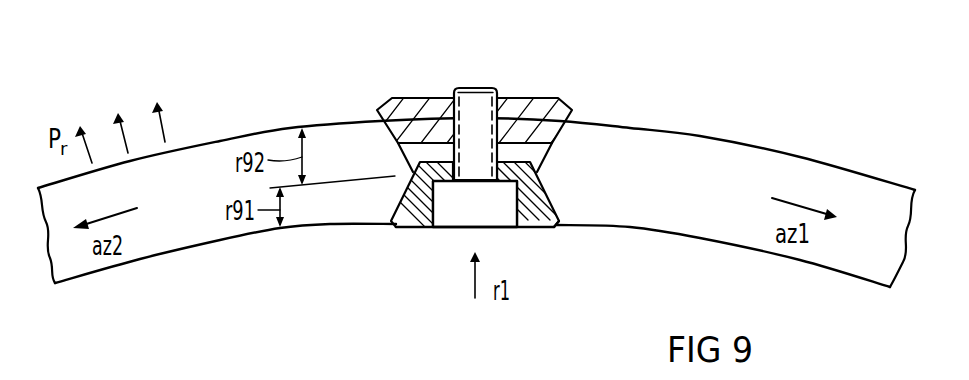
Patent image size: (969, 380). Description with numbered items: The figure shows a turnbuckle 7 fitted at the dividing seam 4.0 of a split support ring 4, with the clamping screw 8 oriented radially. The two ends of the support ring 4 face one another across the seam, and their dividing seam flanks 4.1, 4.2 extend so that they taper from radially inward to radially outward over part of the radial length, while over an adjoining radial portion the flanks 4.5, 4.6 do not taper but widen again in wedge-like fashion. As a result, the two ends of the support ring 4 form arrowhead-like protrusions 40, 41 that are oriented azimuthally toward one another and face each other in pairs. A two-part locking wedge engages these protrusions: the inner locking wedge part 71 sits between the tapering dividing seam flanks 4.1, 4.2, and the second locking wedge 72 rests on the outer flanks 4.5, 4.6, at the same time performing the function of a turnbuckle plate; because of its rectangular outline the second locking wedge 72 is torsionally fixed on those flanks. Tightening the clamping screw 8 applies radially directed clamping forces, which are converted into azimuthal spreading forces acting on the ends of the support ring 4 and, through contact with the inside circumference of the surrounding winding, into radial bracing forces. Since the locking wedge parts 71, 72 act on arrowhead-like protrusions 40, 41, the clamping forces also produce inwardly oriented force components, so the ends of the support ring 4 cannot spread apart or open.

The turnbuckle 7 is at (319, 76).
The support ring 4 is at (708, 206).
The second locking wedge 72 is at (533, 118).
The flank 4.5 is at (392, 140).
The flank 4.6 is at (559, 137).
The arrowhead-like protrusion 40 is at (390, 184).
The dividing seam flank 4.1 is at (393, 200).
The arrowhead-like protrusion 41 is at (552, 173).
The locking wedge part 71 is at (528, 212).
The dividing seam flank 4.2 is at (560, 216).
The clamping screw 8 is at (460, 203).
The dividing seam 4.0 is at (473, 68).